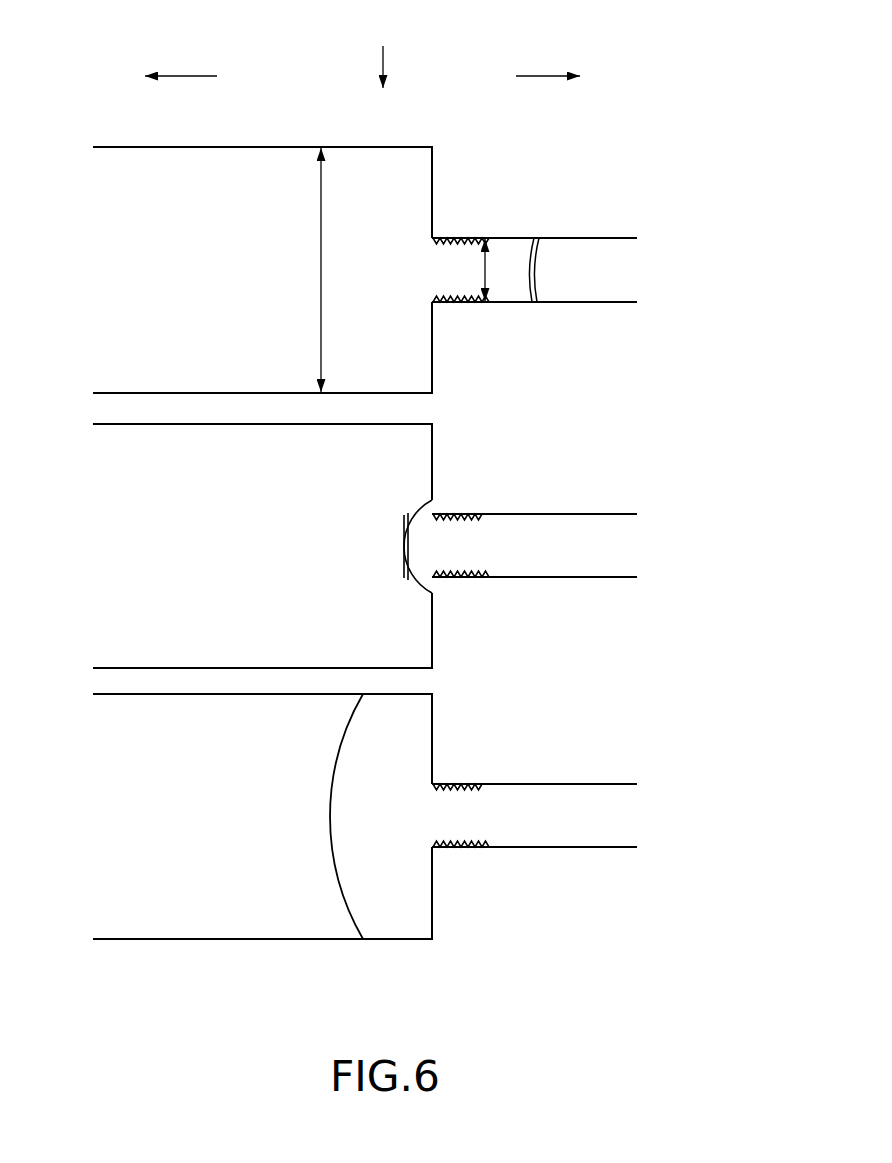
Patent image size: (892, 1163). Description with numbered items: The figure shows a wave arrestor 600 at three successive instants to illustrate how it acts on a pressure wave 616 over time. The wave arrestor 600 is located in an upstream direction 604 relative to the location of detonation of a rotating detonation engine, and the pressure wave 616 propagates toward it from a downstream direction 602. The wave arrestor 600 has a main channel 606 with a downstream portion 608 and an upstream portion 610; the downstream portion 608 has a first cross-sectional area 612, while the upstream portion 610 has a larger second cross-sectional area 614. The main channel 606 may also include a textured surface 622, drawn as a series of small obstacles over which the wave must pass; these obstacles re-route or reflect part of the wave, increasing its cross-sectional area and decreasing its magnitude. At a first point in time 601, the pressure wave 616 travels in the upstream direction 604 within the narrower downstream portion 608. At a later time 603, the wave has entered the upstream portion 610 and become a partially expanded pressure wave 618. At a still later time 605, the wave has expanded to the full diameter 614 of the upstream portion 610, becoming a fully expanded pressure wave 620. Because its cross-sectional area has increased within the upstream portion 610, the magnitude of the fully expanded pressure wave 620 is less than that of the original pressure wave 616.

The wave arrestor 600 is at (458, 768).
The first point in time 601 is at (720, 273).
The downstream direction 602 is at (539, 76).
The later time 603 is at (710, 549).
The upstream direction 604 is at (183, 76).
The later time 605 is at (700, 820).
The main channel 606 is at (561, 258).
The downstream portion 608 is at (618, 248).
The upstream portion 610 is at (187, 825).
The first cross-sectional area 612 is at (484, 270).
The second cross-sectional area 614 is at (321, 270).
The pressure wave 616 is at (533, 277).
The partially expanded pressure wave 618 is at (401, 546).
The fully expanded pressure wave 620 is at (330, 815).
The textured surface 622 is at (433, 302).